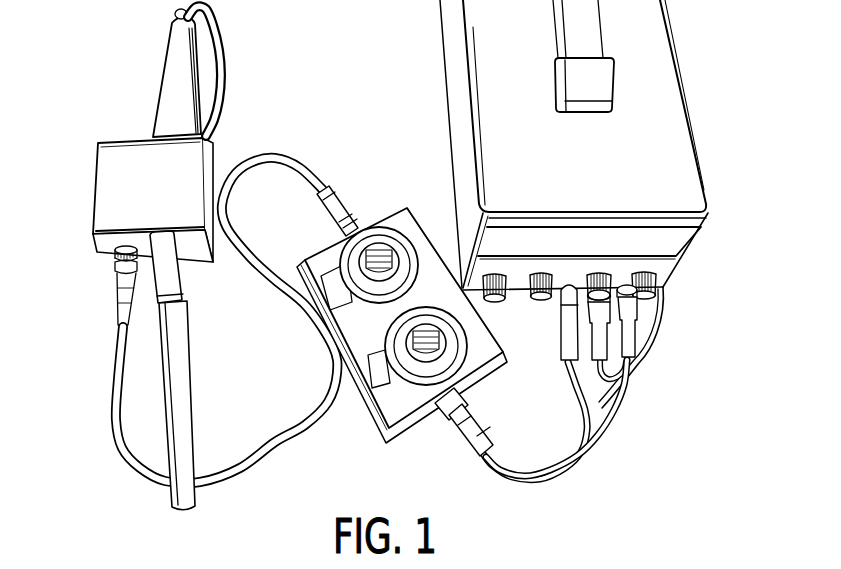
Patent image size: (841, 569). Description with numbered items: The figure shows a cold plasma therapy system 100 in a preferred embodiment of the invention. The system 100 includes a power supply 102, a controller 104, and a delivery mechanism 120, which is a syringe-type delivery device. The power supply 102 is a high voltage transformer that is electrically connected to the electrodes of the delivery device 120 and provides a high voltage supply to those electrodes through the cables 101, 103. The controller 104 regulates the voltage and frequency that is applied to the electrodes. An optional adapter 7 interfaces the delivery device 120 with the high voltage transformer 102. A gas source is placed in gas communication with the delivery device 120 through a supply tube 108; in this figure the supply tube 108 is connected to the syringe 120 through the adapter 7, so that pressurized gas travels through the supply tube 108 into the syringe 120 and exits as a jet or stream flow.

The cold plasma therapy system 100 is at (402, 255).
The adapter 7 is at (107, 169).
The cable 101 is at (227, 477).
The power supply 102 is at (683, 256).
The cable 103 is at (224, 80).
The controller 104 is at (390, 438).
The supply tube 108 is at (186, 392).
The delivery mechanism 120 is at (163, 78).